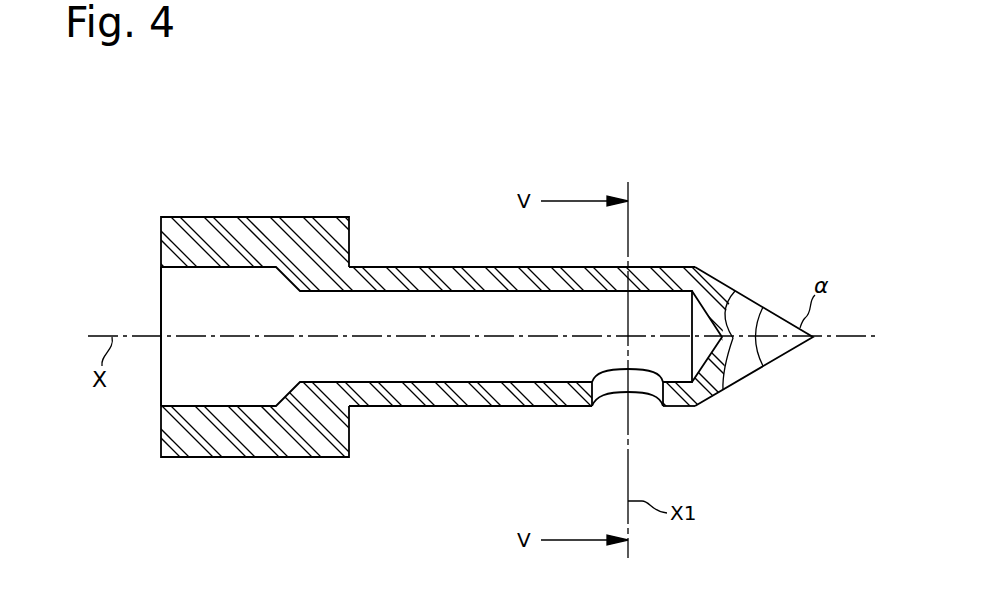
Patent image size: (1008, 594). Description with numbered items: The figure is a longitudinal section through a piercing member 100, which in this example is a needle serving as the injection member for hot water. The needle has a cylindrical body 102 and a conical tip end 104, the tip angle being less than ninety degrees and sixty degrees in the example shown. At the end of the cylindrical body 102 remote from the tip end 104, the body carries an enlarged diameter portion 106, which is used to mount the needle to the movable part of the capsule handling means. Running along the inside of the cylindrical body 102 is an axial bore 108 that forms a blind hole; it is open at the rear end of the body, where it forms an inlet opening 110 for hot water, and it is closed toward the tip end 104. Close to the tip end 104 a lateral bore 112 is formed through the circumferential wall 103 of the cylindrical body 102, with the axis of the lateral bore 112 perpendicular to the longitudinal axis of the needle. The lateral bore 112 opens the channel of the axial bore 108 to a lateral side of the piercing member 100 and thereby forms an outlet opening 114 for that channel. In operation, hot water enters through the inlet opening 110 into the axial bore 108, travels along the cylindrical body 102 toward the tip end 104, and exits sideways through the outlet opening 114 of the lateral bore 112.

The piercing member 100 is at (562, 145).
The cylindrical body 102 is at (427, 267).
The circumferential wall 103 is at (487, 393).
The conical tip end 104 is at (810, 328).
The enlarged diameter portion 106 is at (250, 217).
The axial bore 108 is at (418, 372).
The inlet opening 110 is at (159, 303).
The lateral bore 112 is at (650, 402).
The outlet opening 114 is at (598, 407).